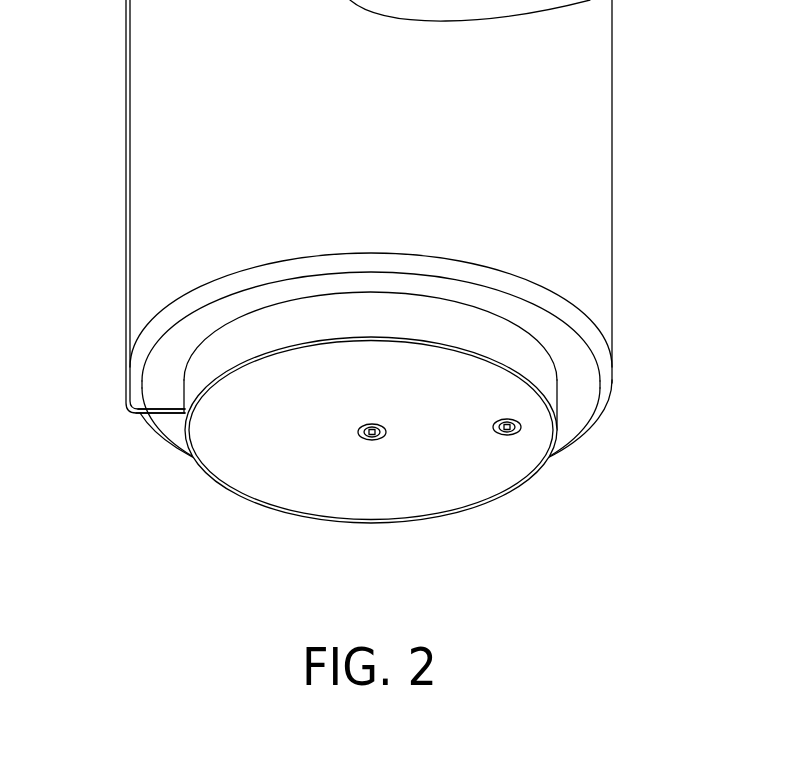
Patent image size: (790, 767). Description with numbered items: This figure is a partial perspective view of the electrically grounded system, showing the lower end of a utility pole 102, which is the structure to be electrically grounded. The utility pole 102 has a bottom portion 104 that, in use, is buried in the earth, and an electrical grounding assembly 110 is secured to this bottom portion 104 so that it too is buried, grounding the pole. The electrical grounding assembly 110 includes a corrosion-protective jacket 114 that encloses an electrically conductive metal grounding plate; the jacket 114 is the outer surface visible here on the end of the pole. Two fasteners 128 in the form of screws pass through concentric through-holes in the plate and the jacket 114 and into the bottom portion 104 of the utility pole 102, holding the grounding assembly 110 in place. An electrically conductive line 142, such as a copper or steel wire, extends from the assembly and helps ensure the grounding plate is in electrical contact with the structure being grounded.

The utility pole 102 is at (560, 160).
The bottom portion 104 is at (147, 237).
The electrical grounding assembly 110 is at (435, 507).
The corrosion-protective jacket 114 is at (272, 470).
The fasteners 128 is at (370, 440).
The electrically conductive line 142 is at (157, 413).